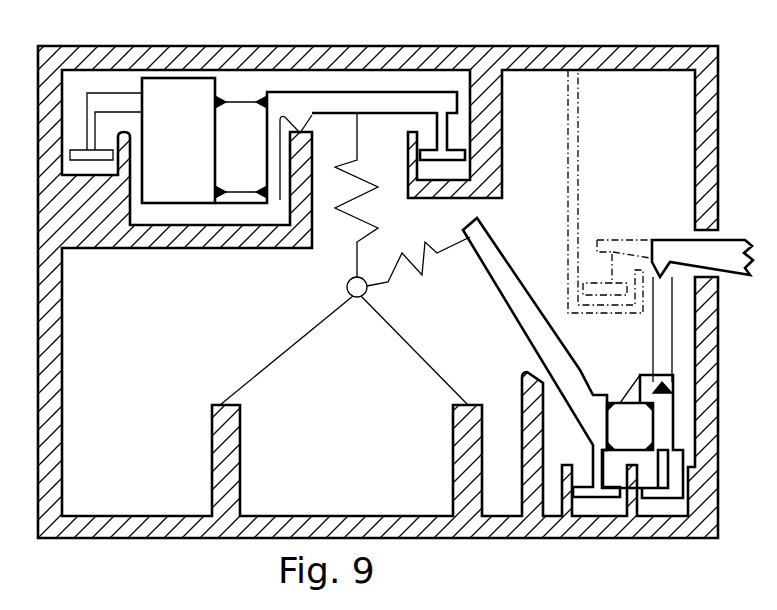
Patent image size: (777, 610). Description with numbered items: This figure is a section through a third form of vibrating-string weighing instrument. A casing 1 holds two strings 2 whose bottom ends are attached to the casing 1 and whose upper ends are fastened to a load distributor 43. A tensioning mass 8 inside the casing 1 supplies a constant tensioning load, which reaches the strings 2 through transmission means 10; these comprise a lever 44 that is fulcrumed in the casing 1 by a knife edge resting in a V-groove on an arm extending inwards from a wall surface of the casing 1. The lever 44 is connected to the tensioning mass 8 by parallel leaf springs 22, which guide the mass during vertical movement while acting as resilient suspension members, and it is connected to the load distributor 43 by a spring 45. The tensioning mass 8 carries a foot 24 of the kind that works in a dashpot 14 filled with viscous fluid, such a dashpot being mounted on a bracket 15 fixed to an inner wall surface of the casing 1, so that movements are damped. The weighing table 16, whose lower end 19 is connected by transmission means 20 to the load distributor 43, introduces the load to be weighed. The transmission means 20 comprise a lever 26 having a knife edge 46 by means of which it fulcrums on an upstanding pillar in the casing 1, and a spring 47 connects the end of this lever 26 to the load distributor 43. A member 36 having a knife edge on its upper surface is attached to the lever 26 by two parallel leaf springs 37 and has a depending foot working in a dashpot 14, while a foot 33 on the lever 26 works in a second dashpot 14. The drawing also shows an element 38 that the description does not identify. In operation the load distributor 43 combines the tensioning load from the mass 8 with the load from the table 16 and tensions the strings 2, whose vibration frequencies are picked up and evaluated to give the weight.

The casing 1 is at (73, 527).
The strings 2 is at (420, 356).
The tensioning mass 8 is at (187, 137).
The transmission means 10 is at (370, 153).
The dashpot 14 is at (92, 172).
The bracket 15 is at (663, 507).
The weighing table 16 is at (732, 250).
The lower end of the weighing table 19 is at (662, 262).
The transmission means 20 is at (605, 343).
The parallel leaf springs 22 is at (233, 103).
The foot 24 is at (92, 131).
The lever 26 is at (512, 293).
The foot 33 is at (560, 528).
The member 36 is at (663, 430).
The parallel leaf springs 37 is at (672, 378).
The plunger foot 38 is at (663, 473).
The load distributor 43 is at (347, 287).
The lever 44 is at (350, 100).
The spring 45 is at (348, 222).
The knife edge 46 is at (537, 382).
The spring 47 is at (420, 273).